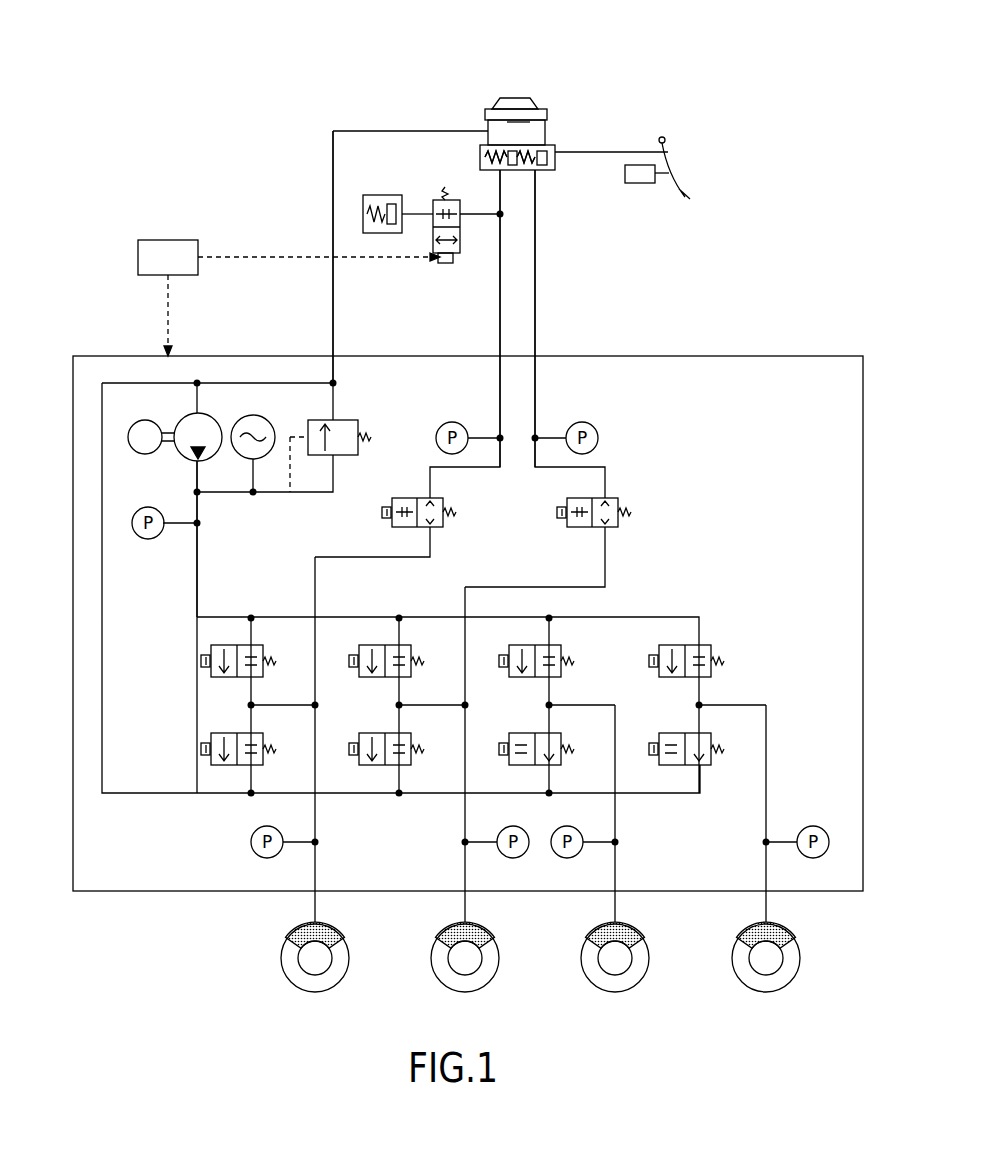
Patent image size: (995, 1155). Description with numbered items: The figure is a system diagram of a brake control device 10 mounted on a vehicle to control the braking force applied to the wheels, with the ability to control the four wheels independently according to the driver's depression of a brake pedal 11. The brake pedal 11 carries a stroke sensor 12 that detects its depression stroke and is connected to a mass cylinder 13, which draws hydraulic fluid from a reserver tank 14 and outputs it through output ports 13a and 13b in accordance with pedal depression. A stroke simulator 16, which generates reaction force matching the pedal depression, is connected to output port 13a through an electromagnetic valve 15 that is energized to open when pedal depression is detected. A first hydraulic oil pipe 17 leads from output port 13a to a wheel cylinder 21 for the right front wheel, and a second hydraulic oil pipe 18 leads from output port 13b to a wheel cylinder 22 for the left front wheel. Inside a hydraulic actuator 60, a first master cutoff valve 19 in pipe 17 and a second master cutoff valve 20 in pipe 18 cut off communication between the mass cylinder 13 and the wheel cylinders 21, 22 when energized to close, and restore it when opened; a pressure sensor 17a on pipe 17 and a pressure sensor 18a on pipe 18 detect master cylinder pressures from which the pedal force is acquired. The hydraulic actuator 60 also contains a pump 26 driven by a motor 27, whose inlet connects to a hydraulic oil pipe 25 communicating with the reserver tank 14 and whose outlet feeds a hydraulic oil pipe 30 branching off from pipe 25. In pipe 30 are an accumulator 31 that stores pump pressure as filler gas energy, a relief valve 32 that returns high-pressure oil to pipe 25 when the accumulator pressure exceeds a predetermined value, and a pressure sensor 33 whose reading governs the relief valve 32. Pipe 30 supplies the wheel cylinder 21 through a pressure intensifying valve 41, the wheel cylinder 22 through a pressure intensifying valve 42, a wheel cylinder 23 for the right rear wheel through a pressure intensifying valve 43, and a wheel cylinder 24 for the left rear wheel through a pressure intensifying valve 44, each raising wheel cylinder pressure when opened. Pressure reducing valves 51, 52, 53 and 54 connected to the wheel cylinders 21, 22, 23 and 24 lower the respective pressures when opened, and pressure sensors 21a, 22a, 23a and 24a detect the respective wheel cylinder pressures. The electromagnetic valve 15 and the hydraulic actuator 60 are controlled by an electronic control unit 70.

The brake control device 10 is at (262, 162).
The brake pedal 11 is at (688, 200).
The stroke sensor 12 is at (641, 184).
The mass cylinder 13 is at (555, 148).
The output port 13a is at (497, 174).
The output port 13b is at (533, 172).
The reserver tank 14 is at (513, 93).
The electromagnetic valve 15 is at (458, 260).
The stroke simulator 16 is at (380, 194).
The first hydraulic oil pipe 17 is at (485, 468).
The pressure sensor 17a is at (452, 422).
The second hydraulic oil pipe 18 is at (545, 470).
The pressure sensor 18a is at (582, 422).
The first master cutoff valve 19 is at (378, 513).
The second master cutoff valve 20 is at (632, 513).
The wheel cylinder 21 is at (298, 927).
The pressure sensor 21a is at (251, 842).
The wheel cylinder 22 is at (447, 927).
The pressure sensor 22a is at (513, 858).
The wheel cylinder 23 is at (747, 928).
The pressure sensor 23a is at (813, 826).
The wheel cylinder 24 is at (597, 928).
The pressure sensor 24a is at (570, 858).
The hydraulic oil pipe 25 is at (415, 130).
The pump 26 is at (210, 413).
The motor 27 is at (140, 420).
The hydraulic oil pipe 30 is at (200, 514).
The accumulator 31 is at (253, 415).
The relief valve 32 is at (353, 420).
The pressure sensor 33 is at (148, 540).
The pressure intensifying valve 41 is at (201, 661).
The pressure intensifying valve 42 is at (376, 644).
The pressure intensifying valve 43 is at (707, 645).
The pressure intensifying valve 44 is at (563, 652).
The pressure reducing valve 51 is at (201, 747).
The pressure reducing valve 52 is at (376, 767).
The pressure reducing valve 53 is at (708, 768).
The pressure reducing valve 54 is at (563, 762).
The hydraulic actuator 60 is at (783, 355).
The electronic control unit (ECU) 70 is at (170, 239).